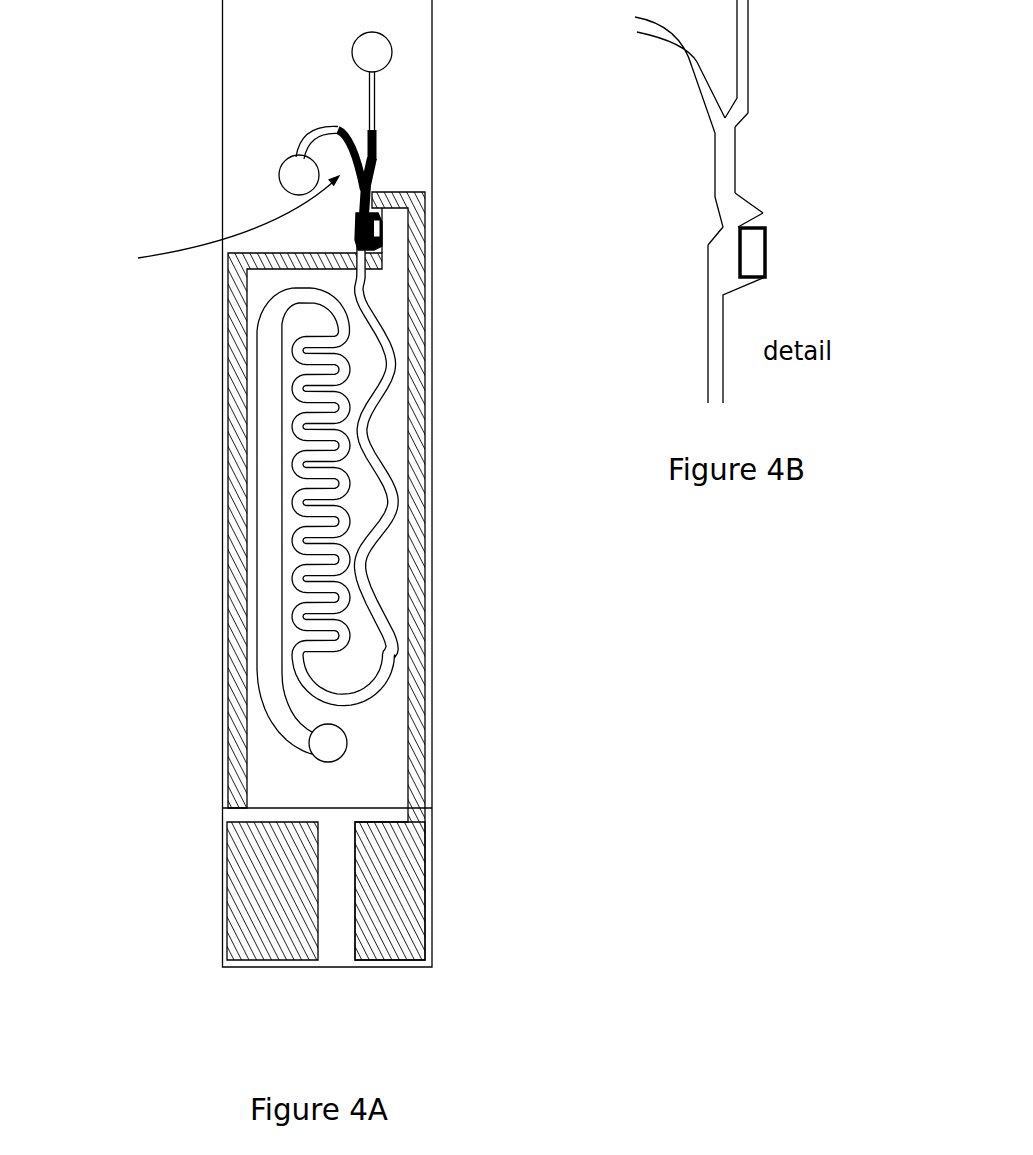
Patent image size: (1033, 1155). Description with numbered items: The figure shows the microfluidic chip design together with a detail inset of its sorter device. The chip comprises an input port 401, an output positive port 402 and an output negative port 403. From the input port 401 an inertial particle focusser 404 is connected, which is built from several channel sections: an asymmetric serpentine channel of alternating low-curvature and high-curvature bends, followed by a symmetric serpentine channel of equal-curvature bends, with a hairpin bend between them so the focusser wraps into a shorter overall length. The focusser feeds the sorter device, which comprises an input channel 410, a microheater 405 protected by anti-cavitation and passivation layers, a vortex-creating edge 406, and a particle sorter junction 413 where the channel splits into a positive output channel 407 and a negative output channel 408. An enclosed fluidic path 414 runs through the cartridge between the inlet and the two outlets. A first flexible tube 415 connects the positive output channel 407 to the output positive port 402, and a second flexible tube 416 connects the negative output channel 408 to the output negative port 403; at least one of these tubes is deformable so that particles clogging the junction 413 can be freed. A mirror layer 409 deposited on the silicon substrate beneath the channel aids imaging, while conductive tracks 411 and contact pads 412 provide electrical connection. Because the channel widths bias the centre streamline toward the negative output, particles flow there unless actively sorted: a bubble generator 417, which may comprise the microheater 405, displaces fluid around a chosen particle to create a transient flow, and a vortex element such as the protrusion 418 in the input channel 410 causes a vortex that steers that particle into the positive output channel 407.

In FIG. 4A, the input port 401 is at (325, 744).
In FIG. 4A, the output positive port 402 is at (372, 53).
In FIG. 4A, the output negative port 403 is at (299, 175).
In FIG. 4A, the inertial particle focusser 404 is at (390, 482).
In FIG. 4A, the microheater 405 is at (380, 230).
In FIG. 4B, the microheater 405 is at (755, 253).
In FIG. 4B, the vortex-creating edge 406 is at (743, 227).
In FIG. 4B, the positive output channel 407 is at (748, 50).
In FIG. 4B, the negative output channel 408 is at (692, 70).
In FIG. 4A, the mirror layer 409 is at (370, 178).
In FIG. 4B, the input channel 410 is at (717, 323).
In FIG. 4A, the conductive tracks 411 is at (420, 717).
In FIG. 4A, the contact pads 412 is at (385, 925).
In FIG. 4B, the particle sorter junction 413 is at (744, 133).
In FIG. 4A, the enclosed fluidic path 414 is at (217, 225).
In FIG. 4A, the first flexible tube 415 is at (377, 147).
In FIG. 4A, the second flexible tube 416 is at (368, 130).
In FIG. 4B, the bubble generator 417 is at (772, 263).
In FIG. 4B, the protrusion 418 is at (748, 200).